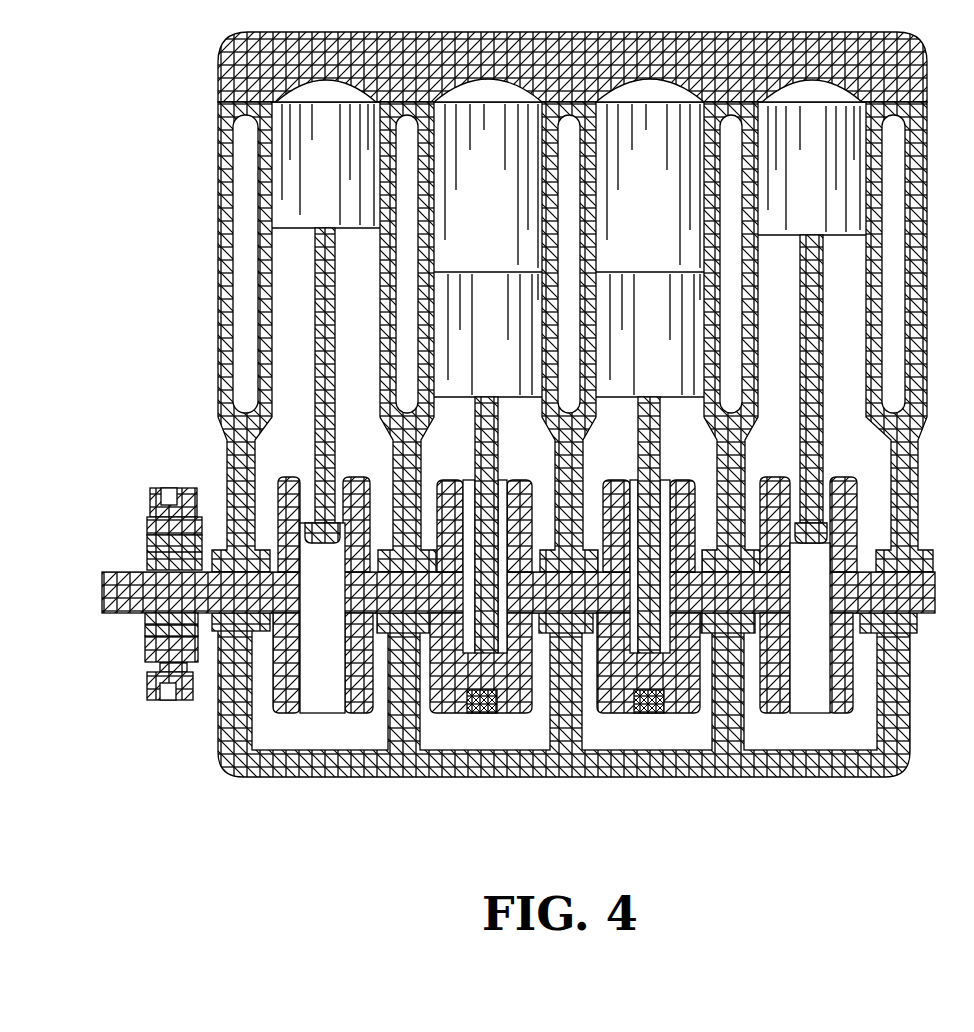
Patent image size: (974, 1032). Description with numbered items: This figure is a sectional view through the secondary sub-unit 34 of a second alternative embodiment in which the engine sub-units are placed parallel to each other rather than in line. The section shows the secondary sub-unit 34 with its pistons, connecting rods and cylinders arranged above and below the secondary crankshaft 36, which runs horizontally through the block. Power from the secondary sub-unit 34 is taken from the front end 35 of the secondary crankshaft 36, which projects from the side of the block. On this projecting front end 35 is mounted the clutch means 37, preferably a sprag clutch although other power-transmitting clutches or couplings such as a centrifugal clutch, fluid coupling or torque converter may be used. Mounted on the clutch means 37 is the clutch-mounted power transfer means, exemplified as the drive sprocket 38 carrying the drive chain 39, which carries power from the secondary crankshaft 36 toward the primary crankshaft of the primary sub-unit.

The secondary sub-unit 34 is at (572, 404).
The front end of secondary crankshaft 35 is at (120, 613).
The secondary crankshaft 36 is at (307, 577).
The clutch means 37 is at (147, 552).
The drive sprocket 38 is at (148, 528).
The drive chain 39 is at (151, 500).